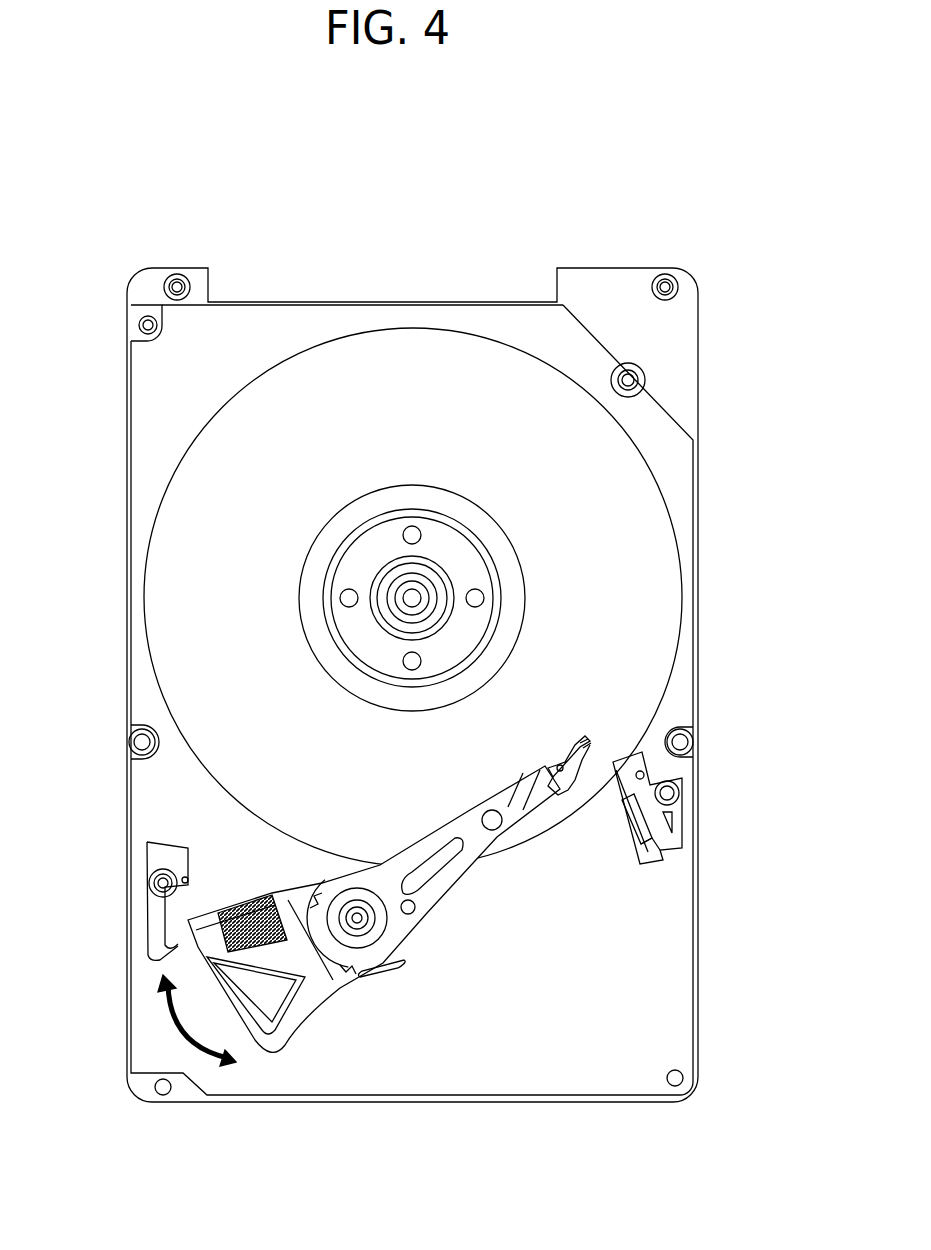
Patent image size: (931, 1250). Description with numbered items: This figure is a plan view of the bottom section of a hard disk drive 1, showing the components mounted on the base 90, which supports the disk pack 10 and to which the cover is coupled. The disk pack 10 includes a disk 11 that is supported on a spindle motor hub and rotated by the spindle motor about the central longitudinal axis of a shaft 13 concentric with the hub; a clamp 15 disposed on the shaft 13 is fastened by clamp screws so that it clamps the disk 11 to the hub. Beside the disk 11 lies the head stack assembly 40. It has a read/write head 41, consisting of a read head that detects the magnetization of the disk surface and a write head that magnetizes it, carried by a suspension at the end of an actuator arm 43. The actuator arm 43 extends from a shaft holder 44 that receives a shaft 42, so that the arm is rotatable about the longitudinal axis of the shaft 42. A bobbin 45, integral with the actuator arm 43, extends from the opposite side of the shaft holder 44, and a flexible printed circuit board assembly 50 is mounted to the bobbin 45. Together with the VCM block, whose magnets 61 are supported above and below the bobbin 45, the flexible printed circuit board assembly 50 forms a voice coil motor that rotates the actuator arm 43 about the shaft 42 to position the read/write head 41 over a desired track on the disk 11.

The hard disk drive 1 is at (92, 239).
The disk pack 10 is at (575, 521).
The disk 11 is at (580, 715).
The shaft 13 is at (412, 598).
The clamp 15 is at (495, 653).
The head stack assembly 40 is at (481, 951).
The read/write head 41 is at (590, 747).
The shaft 42 is at (368, 924).
The actuator arm 43 is at (467, 865).
The shaft holder 44 is at (343, 953).
The bobbin 45 is at (320, 1013).
The flexible printed circuit board assembly 50 is at (240, 1047).
The magnets 61 is at (192, 921).
The base 90 is at (710, 1001).